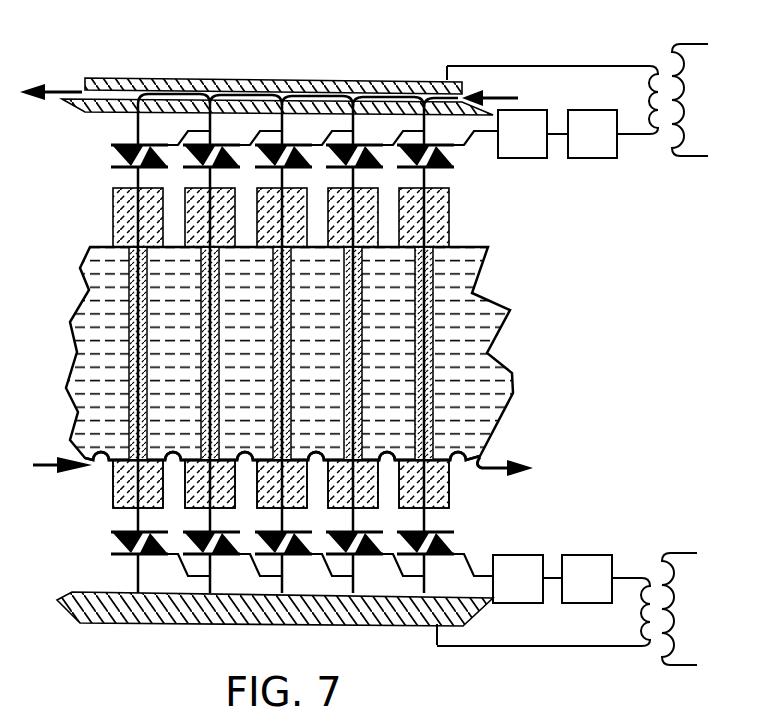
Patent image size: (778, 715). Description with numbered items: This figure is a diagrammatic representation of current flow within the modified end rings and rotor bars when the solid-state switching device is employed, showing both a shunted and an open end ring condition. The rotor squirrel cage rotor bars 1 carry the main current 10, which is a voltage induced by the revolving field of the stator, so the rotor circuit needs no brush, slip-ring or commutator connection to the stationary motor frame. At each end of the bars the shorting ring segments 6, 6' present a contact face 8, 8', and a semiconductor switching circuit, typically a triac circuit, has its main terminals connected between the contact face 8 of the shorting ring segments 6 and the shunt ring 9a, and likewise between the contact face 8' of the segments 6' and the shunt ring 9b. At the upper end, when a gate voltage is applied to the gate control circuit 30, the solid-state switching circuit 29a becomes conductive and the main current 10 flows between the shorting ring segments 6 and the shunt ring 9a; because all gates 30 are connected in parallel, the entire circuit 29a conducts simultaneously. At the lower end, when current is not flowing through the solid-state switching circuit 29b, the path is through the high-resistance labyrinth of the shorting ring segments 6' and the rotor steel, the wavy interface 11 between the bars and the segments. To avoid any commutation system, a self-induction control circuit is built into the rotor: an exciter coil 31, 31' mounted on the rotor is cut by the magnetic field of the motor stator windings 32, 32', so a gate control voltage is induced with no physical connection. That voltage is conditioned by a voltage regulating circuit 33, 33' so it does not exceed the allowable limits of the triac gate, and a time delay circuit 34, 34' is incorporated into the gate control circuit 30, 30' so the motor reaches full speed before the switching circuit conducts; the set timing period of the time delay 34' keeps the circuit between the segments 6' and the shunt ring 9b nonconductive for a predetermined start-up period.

The rotor bars 1 is at (292, 372).
The shorting ring segments 6 is at (302, 342).
The shorting ring segments 6' is at (266, 484).
The contact face 8 is at (289, 215).
The contact face 8' is at (289, 496).
The shunt ring 9a is at (268, 80).
The shunt ring 9b is at (205, 624).
The main current 10 is at (117, 181).
The corrugated surface 11 is at (488, 460).
The solid-state switching circuit 29a is at (112, 150).
The solid-state switching circuit 29b is at (112, 550).
The gate control circuit 30 is at (333, 152).
The gate control circuit 30' is at (330, 559).
The exciter coil 31 is at (552, 119).
The exciter coil 31' is at (543, 612).
The motor stator windings 32 is at (694, 100).
The motor stator windings 32' is at (689, 609).
The voltage regulating circuit 33 is at (592, 150).
The voltage regulating circuit 33' is at (587, 561).
The time delay circuit 34 is at (533, 120).
The time delay circuit 34' is at (527, 561).